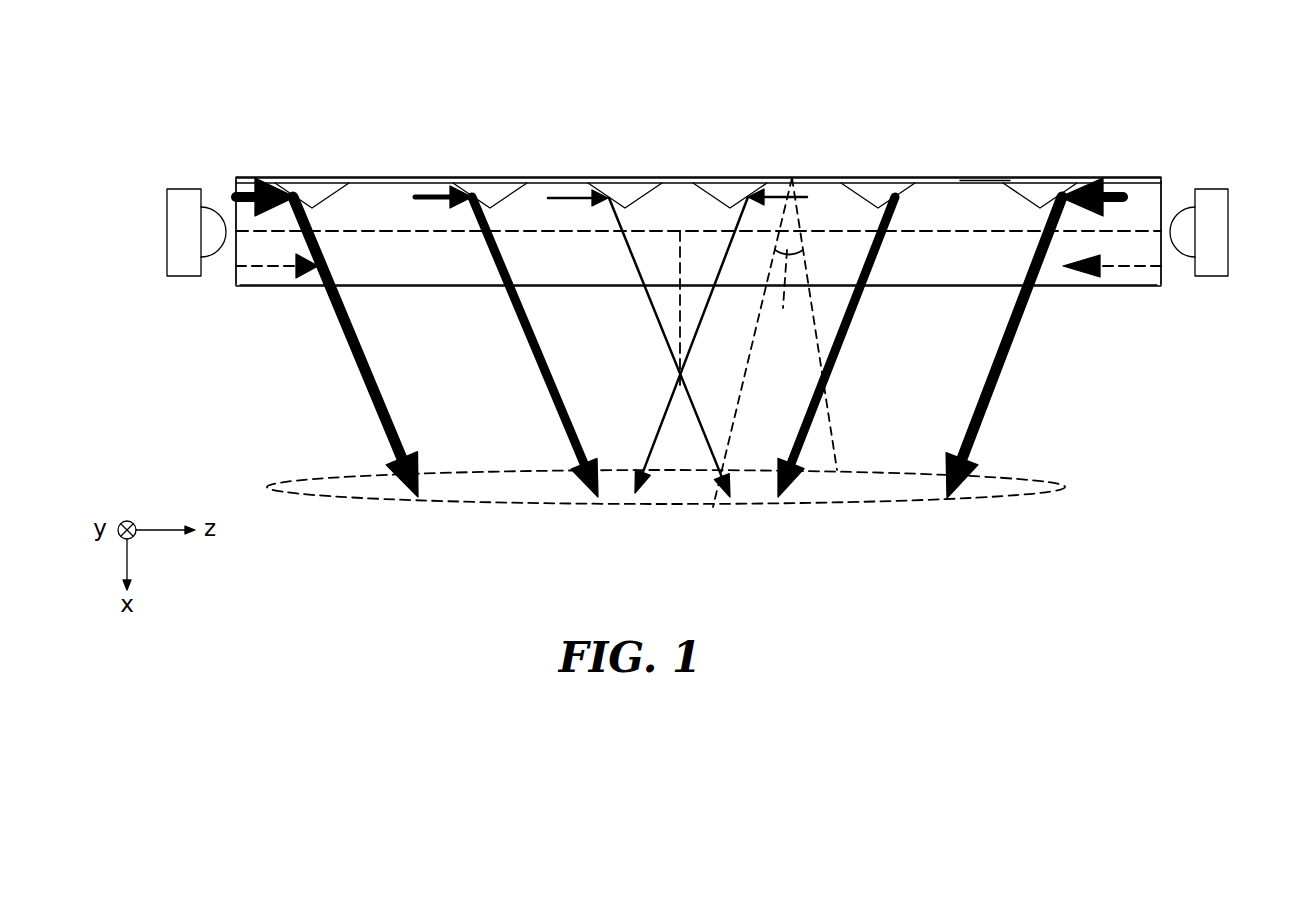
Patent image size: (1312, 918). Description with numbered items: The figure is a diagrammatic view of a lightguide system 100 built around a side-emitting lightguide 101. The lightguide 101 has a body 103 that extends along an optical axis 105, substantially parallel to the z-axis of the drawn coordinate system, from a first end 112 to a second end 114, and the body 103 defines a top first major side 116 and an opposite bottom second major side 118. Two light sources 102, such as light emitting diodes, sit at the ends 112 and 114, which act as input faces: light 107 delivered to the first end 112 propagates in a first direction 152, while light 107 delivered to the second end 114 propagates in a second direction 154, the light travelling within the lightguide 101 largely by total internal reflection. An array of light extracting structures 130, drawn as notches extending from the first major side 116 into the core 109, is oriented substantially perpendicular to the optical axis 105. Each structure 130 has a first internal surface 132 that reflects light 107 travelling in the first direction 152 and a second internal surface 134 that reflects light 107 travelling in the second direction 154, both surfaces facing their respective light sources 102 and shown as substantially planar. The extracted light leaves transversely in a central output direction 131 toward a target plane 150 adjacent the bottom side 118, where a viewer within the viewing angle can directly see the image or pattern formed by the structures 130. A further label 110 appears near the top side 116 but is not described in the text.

The lightguide system 100 is at (166, 78).
The lightguide 101 is at (307, 144).
The light source 102 is at (167, 232).
The body 103 is at (366, 162).
The optical axis 105 is at (262, 234).
The light 107 is at (567, 200).
The core 109 is at (603, 268).
The top surface region 110 is at (983, 178).
The first end 112 is at (235, 179).
The second end 114 is at (1163, 178).
The first major side 116 is at (949, 178).
The second major side 118 is at (925, 286).
The light extracting structures 130 is at (847, 160).
The central output direction 131 is at (680, 332).
The first internal surface 132 is at (477, 178).
The second internal surface 134 is at (900, 180).
The target plane 150 is at (282, 483).
The first direction 152 is at (277, 268).
The second direction 154 is at (1133, 270).